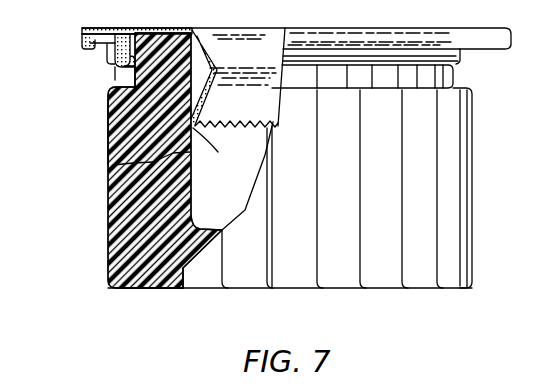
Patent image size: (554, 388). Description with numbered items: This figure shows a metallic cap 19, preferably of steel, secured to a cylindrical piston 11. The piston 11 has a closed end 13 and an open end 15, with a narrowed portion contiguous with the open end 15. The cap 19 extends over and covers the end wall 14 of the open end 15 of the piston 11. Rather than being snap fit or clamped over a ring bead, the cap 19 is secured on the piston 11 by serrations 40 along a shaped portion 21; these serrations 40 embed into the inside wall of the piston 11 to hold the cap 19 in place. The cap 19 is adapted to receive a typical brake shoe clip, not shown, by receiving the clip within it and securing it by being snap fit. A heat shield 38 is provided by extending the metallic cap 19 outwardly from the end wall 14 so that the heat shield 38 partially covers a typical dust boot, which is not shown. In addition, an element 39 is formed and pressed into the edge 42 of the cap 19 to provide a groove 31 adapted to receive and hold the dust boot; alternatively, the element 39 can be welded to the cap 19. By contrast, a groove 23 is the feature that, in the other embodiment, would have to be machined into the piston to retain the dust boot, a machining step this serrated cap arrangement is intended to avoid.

The cylindrical piston 11 is at (472, 209).
The closed end 13 is at (287, 284).
The end wall 14 is at (165, 28).
The open end 15 is at (243, 168).
The metallic cap 19 is at (242, 38).
The shaped portion 21 is at (110, 100).
The groove 23 is at (453, 80).
The groove 31 is at (133, 79).
The heat shield 38 is at (90, 17).
The element 39 is at (100, 45).
The serrations 40 is at (108, 170).
The edge 42 is at (84, 33).